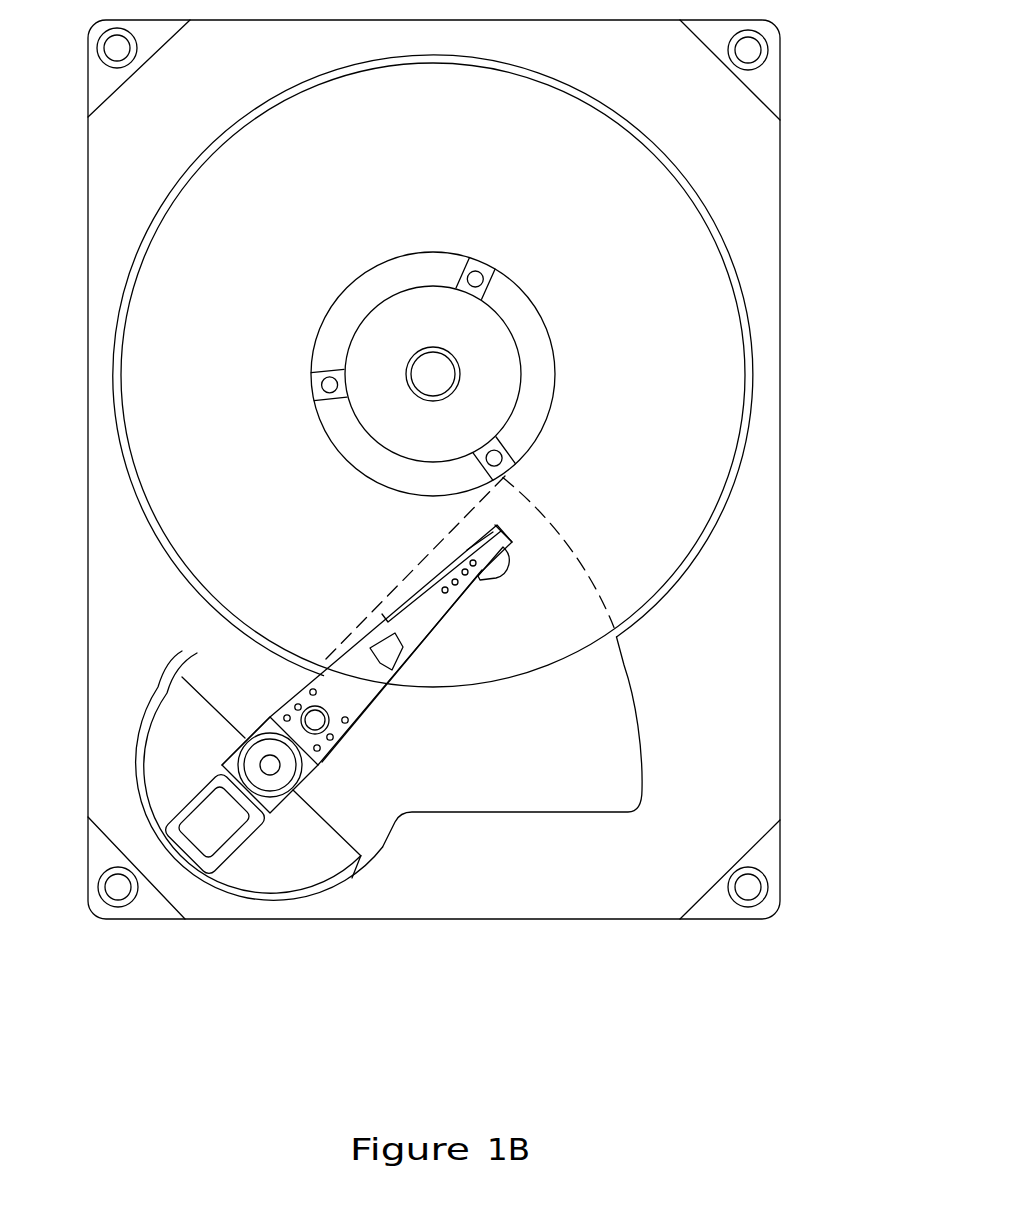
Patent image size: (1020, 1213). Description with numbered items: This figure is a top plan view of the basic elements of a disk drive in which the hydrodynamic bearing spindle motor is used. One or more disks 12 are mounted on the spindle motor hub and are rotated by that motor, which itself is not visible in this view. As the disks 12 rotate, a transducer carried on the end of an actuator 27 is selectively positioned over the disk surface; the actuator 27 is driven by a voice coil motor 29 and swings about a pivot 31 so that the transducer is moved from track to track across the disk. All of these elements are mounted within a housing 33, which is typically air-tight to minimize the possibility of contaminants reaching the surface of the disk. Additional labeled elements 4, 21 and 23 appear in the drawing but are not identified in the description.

The disk drive 4 is at (332, 905).
The disks 12 is at (247, 343).
The spindle hub 21 is at (455, 386).
The head slider 23 is at (510, 533).
The actuator 27 is at (340, 683).
The voice coil motor 29 is at (270, 765).
The pivot 31 is at (285, 772).
The housing 33 is at (780, 107).